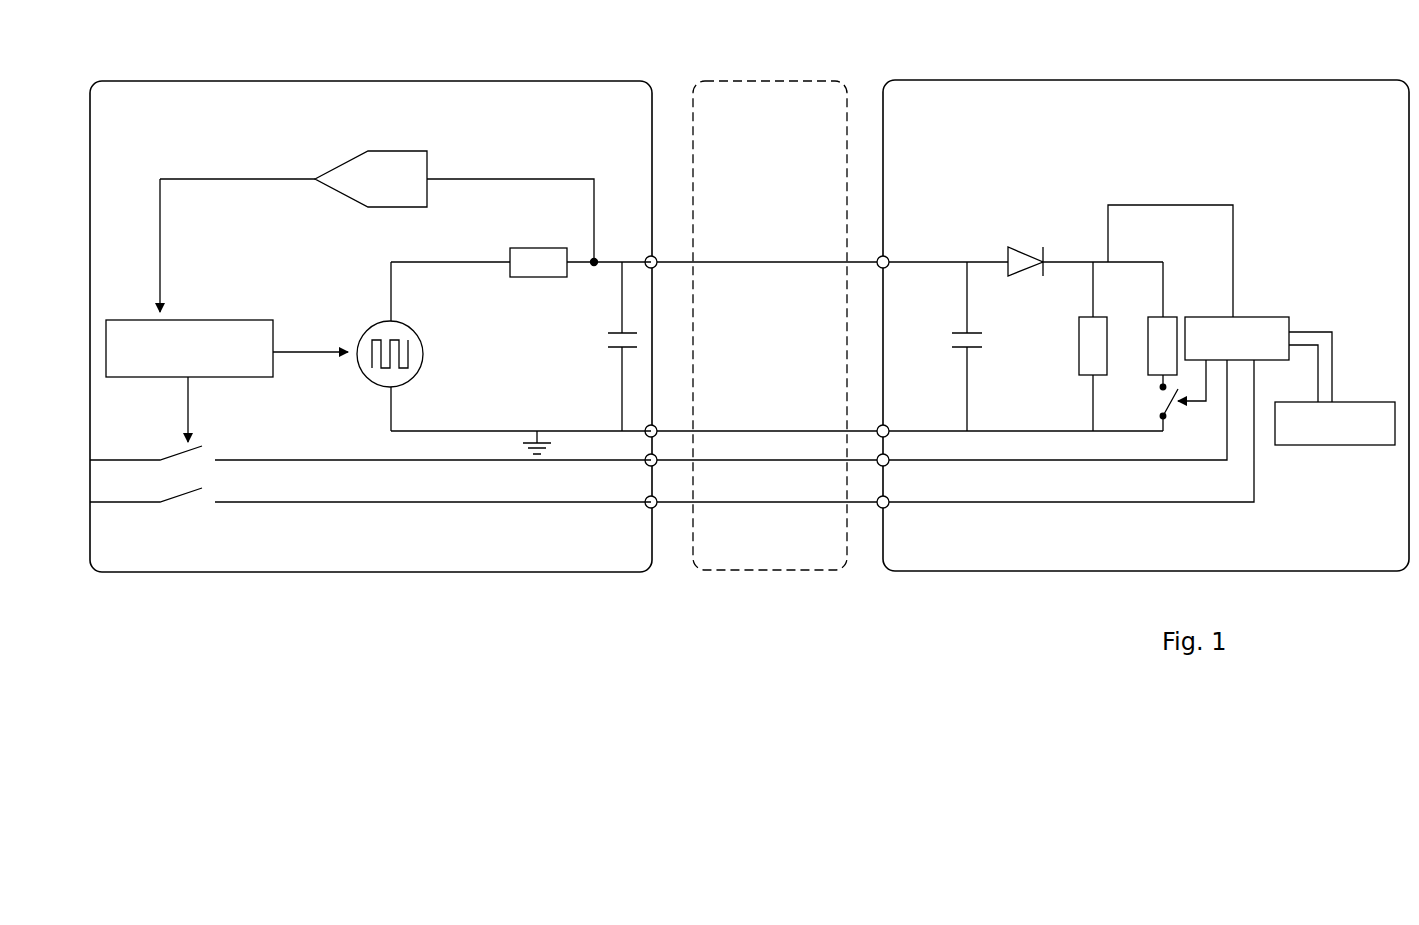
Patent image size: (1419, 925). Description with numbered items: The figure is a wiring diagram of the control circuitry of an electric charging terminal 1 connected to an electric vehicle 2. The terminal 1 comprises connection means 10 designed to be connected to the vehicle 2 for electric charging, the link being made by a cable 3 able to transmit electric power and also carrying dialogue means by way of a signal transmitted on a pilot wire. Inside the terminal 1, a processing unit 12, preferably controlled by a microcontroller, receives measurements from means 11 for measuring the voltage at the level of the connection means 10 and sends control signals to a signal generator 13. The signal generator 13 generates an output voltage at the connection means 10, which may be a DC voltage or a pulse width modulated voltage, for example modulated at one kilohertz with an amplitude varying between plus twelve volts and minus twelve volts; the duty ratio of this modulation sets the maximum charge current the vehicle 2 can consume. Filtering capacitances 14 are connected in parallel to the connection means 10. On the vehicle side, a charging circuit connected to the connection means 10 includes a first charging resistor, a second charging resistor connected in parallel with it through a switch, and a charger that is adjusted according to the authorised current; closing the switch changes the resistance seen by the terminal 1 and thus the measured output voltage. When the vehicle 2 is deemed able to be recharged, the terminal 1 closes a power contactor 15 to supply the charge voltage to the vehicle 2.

The terminal 1 is at (496, 58).
The vehicle 2 is at (1246, 58).
The cable 3 is at (782, 58).
The connection means 10 is at (656, 257).
The means for measuring the voltage 11 is at (392, 150).
The processing unit 12 is at (133, 320).
The signal generator 13 is at (411, 403).
The filtering capacitances 14 is at (615, 355).
The power contactor 15 is at (215, 474).